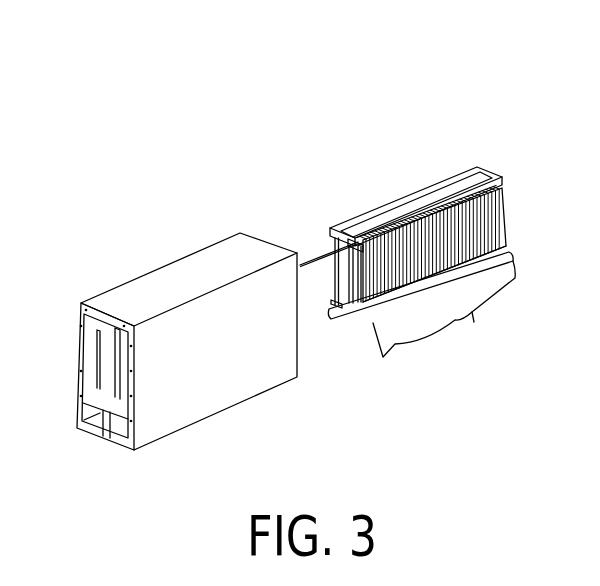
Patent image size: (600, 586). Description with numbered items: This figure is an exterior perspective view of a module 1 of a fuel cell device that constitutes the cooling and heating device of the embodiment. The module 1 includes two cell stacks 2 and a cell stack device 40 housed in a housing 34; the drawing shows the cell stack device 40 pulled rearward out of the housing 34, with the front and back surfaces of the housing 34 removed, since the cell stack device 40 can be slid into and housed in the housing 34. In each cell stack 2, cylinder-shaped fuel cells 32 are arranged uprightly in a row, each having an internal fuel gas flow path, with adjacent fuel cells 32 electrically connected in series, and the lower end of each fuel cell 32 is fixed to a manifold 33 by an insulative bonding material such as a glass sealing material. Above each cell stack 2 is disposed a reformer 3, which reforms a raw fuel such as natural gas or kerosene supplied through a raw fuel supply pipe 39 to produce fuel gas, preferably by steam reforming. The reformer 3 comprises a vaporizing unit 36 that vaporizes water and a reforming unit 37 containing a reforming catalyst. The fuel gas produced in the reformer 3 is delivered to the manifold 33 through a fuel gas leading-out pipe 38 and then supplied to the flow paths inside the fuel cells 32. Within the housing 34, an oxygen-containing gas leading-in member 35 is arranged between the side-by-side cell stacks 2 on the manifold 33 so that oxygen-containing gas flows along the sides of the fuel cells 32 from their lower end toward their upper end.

The module 1 is at (146, 81).
The cell stack 2 is at (474, 322).
The reformer 3 is at (338, 229).
The fuel cell 32 is at (501, 218).
The manifold 33 is at (383, 357).
The housing 34 is at (212, 252).
The oxygen-containing gas leading-in member 35 is at (123, 343).
The vaporizing unit 36 is at (393, 207).
The reforming unit 37 is at (483, 172).
The fuel gas leading-out pipe 38 is at (330, 242).
The raw fuel supply pipe 39 is at (303, 254).
The cell stack device 40 is at (440, 158).